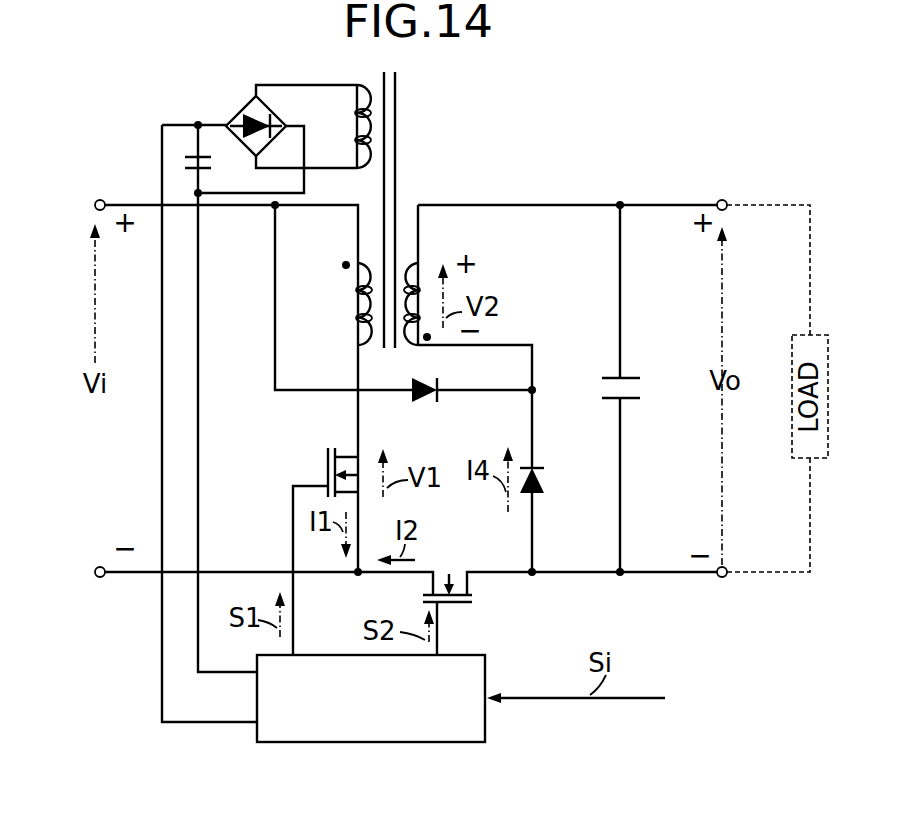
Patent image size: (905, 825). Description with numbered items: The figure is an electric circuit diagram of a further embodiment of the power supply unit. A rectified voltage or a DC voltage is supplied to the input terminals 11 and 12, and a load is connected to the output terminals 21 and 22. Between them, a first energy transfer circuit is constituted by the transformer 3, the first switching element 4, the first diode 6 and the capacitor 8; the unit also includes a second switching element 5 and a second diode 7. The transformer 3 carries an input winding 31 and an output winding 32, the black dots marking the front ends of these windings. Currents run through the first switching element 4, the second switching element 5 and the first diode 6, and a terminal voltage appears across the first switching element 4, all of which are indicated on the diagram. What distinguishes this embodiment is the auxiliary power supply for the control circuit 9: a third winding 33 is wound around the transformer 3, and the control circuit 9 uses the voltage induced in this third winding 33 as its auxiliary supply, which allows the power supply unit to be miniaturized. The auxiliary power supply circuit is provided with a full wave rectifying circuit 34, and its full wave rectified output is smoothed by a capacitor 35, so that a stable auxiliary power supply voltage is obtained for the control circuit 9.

The transformer 3 is at (433, 170).
The first switching element 4 is at (325, 465).
The second switching element 5 is at (460, 604).
The first diode 6 is at (542, 490).
The second diode 7 is at (426, 395).
The capacitor 8 is at (613, 378).
The control circuit 9 is at (488, 672).
The input terminal 11 is at (95, 203).
The input terminal 12 is at (95, 569).
The output terminal 21 is at (727, 202).
The output terminal 22 is at (727, 569).
The input winding 31 is at (356, 299).
The output winding 32 is at (420, 290).
The third winding 33 is at (354, 142).
The full wave rectifying circuit 34 is at (240, 117).
The capacitor 35 is at (212, 165).